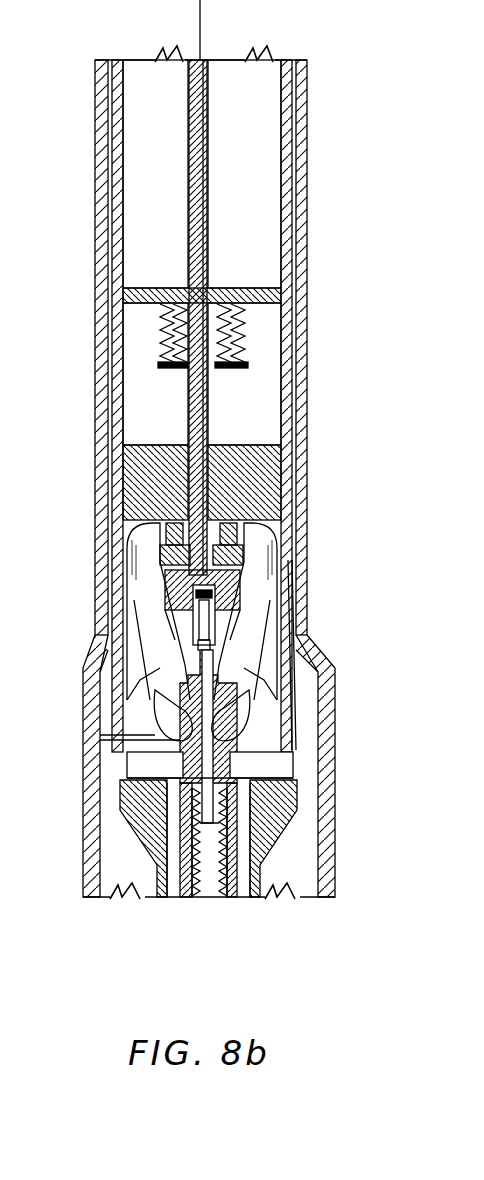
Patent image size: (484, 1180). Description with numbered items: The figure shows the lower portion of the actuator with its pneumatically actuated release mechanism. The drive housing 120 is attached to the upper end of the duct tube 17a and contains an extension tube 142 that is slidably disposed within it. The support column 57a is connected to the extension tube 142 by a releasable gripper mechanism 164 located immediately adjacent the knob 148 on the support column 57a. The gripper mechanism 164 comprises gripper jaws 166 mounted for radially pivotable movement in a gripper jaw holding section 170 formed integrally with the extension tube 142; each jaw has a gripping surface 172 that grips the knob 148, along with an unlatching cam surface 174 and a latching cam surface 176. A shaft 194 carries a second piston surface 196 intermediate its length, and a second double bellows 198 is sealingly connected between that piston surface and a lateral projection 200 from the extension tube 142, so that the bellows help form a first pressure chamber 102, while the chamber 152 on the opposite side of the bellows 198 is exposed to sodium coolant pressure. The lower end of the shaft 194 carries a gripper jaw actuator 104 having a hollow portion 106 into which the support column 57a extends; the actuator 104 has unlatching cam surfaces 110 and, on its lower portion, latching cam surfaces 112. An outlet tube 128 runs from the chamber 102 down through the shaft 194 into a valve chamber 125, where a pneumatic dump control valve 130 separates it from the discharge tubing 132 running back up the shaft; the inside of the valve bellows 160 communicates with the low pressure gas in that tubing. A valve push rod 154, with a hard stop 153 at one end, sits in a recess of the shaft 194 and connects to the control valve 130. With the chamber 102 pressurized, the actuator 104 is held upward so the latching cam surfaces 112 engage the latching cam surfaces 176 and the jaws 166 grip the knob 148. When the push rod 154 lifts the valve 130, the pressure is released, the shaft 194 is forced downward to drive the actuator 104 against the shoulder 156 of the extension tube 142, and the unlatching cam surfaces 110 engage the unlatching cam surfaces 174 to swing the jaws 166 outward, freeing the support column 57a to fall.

The outlet tube 128 is at (190, 126).
The first pressure chamber 102 is at (174, 192).
The lateral projection 200 is at (150, 302).
The second double bellows 198 is at (160, 340).
The second piston surface 196 is at (178, 368).
The shaft 194 is at (189, 441).
The chamber 152 is at (262, 396).
The discharge tubing 132 is at (208, 441).
The drive housing 120 is at (305, 382).
The gripper jaw holding section 170 is at (296, 490).
The pneumatic dump control valve 130 is at (292, 547).
The valve push rod 154 is at (280, 576).
The valve chamber 125 is at (200, 596).
The gripper jaw actuator 104 is at (212, 622).
The unlatching cam surfaces 110 is at (203, 630).
The unlatching cam surface 174 is at (266, 620).
The releasable gripper mechanism 164 is at (292, 640).
The valve bellows 160 is at (304, 660).
The hollow portion 106 is at (190, 690).
The hard stop 153 is at (278, 682).
The latching cam surfaces 112 is at (180, 740).
The knob 148 is at (238, 700).
The gripper jaws 166 is at (262, 737).
The gripping surface 172 is at (264, 745).
The latching cam surface 176 is at (263, 758).
The shoulder 156 is at (130, 800).
The duct tube 17a is at (336, 832).
The extension tube 142 is at (135, 834).
The support column 57a is at (236, 877).